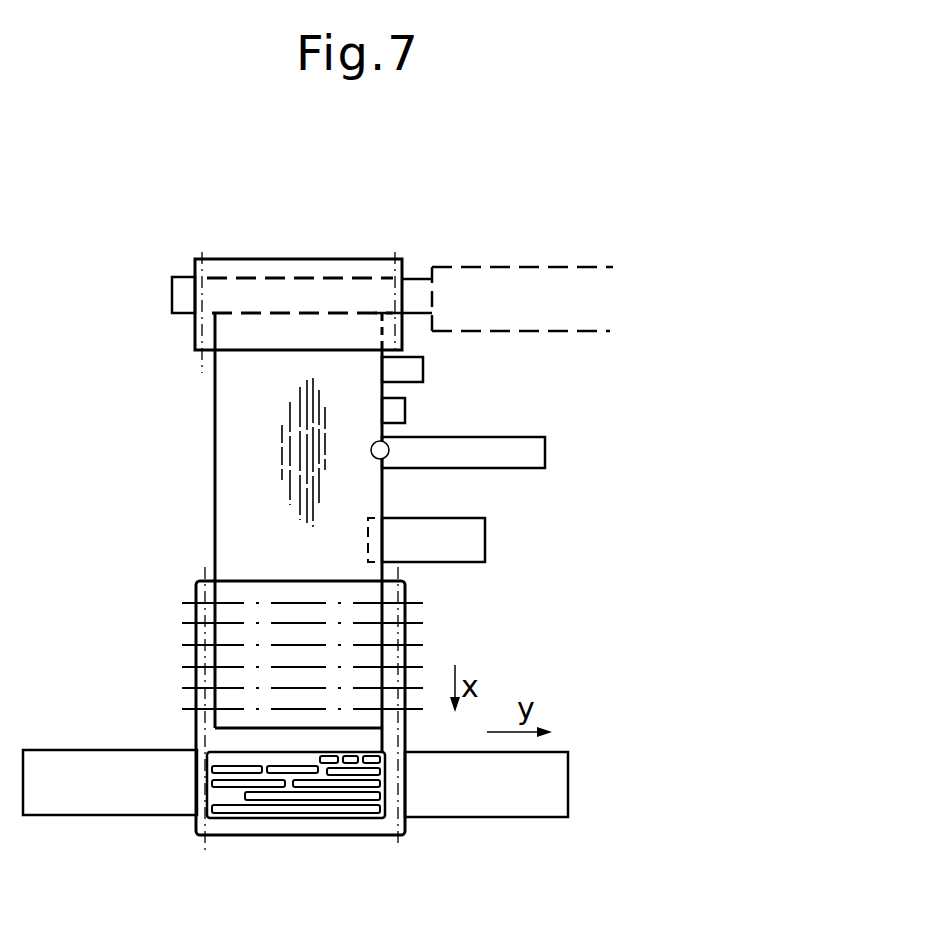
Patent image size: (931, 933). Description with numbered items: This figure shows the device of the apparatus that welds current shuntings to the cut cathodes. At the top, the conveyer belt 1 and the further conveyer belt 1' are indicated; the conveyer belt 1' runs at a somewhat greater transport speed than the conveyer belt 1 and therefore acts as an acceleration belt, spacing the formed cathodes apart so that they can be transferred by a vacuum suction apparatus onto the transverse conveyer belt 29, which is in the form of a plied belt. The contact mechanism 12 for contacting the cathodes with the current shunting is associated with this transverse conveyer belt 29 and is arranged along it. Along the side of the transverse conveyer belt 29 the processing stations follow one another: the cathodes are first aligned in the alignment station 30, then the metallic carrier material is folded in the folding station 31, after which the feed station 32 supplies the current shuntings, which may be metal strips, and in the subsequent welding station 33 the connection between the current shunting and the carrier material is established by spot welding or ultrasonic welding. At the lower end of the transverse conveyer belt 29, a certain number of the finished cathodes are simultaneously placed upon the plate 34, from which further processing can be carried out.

The conveyer belt 1 is at (494, 252).
The conveyer belt 1' is at (287, 280).
The contact mechanism 12 is at (110, 633).
The transverse conveyer belt 29 is at (240, 407).
The alignment station 30 is at (408, 367).
The folding station 31 is at (395, 410).
The feed station 32 is at (389, 450).
The welding station 33 is at (470, 532).
The plate 34 is at (378, 824).